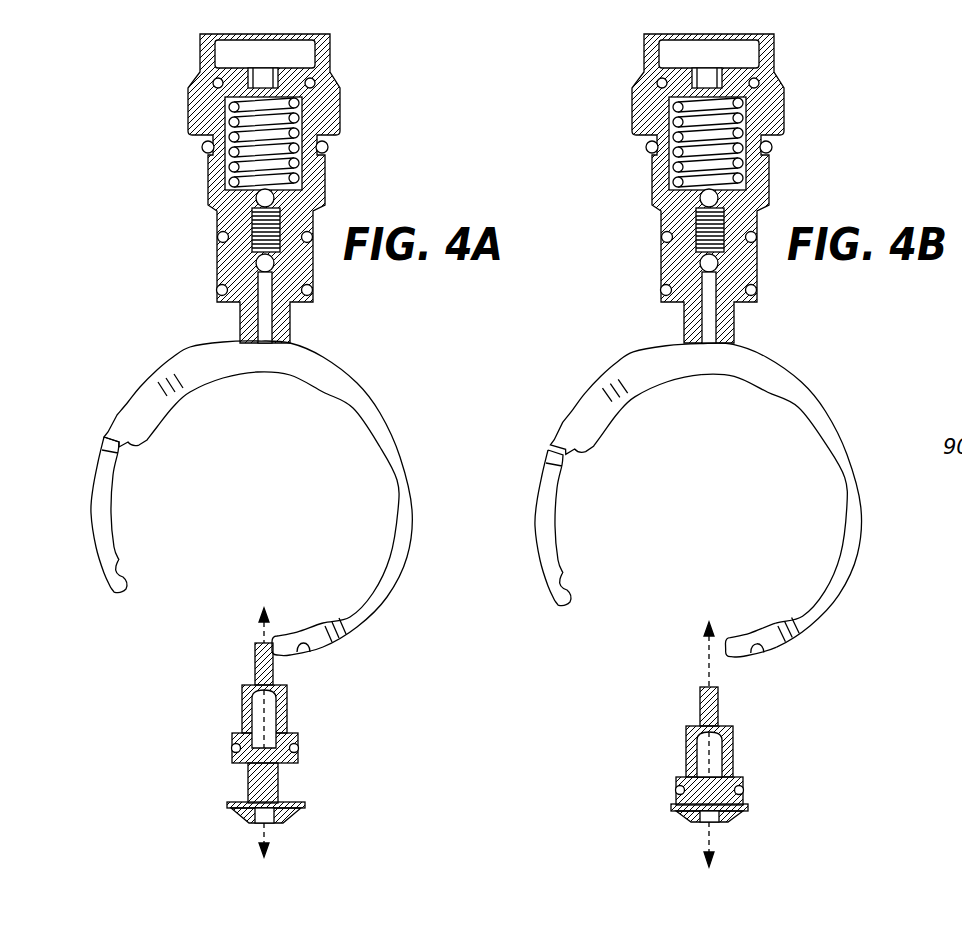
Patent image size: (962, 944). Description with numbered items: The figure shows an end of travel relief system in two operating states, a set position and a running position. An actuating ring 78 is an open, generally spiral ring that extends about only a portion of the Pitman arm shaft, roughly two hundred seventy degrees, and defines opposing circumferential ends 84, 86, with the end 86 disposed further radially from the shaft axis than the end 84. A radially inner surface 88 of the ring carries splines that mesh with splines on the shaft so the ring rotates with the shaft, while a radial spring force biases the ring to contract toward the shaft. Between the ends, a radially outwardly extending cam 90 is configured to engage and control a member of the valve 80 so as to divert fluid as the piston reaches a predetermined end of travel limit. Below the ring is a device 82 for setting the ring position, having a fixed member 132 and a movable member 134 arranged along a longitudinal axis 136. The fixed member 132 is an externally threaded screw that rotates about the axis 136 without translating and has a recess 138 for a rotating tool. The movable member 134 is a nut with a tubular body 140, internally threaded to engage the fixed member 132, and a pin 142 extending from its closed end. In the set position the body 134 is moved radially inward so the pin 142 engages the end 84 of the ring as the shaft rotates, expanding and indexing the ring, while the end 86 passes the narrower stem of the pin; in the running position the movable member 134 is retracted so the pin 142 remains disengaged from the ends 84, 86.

In FIG. 4A, the valve 80 is at (205, 172).
In FIG. 4B, the valve 80 is at (649, 172).
In FIG. 4A, the cam 90 is at (200, 362).
In FIG. 4B, the cam 90 is at (645, 362).
In FIG. 4A, the radially inner surface 88 is at (353, 408).
In FIG. 4B, the radially inner surface 88 is at (798, 408).
In FIG. 4A, the circumferential end 84 is at (286, 646).
In FIG. 4B, the circumferential end 84 is at (742, 653).
In FIG. 4A, the actuating ring 78 is at (100, 482).
In FIG. 4B, the actuating ring 78 is at (545, 485).
In FIG. 4A, the circumferential end 86 is at (108, 588).
In FIG. 4B, the circumferential end 86 is at (553, 602).
In FIG. 4A, the pin 142 is at (255, 668).
In FIG. 4B, the pin 142 is at (700, 712).
In FIG. 4A, the movable member 134 is at (243, 718).
In FIG. 4B, the movable member 134 is at (687, 765).
In FIG. 4A, the tubular body 140 is at (287, 712).
In FIG. 4B, the tubular body 140 is at (733, 772).
In FIG. 4A, the device 82 is at (298, 760).
In FIG. 4B, the device 82 is at (733, 745).
In FIG. 4A, the fixed member 132 is at (292, 812).
In FIG. 4B, the fixed member 132 is at (740, 818).
In FIG. 4A, the recess 138 is at (262, 812).
In FIG. 4B, the recess 138 is at (705, 814).
In FIG. 4A, the longitudinal axis 136 is at (267, 836).
In FIG. 4B, the longitudinal axis 136 is at (712, 836).